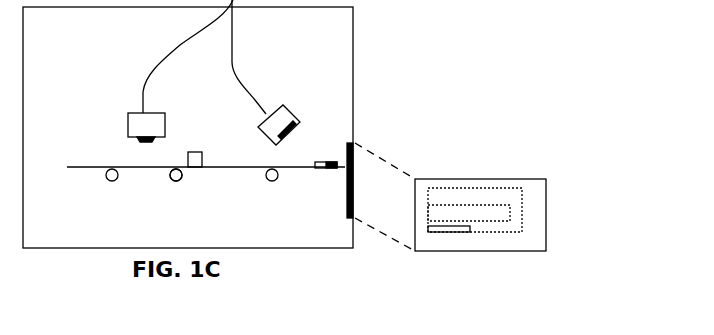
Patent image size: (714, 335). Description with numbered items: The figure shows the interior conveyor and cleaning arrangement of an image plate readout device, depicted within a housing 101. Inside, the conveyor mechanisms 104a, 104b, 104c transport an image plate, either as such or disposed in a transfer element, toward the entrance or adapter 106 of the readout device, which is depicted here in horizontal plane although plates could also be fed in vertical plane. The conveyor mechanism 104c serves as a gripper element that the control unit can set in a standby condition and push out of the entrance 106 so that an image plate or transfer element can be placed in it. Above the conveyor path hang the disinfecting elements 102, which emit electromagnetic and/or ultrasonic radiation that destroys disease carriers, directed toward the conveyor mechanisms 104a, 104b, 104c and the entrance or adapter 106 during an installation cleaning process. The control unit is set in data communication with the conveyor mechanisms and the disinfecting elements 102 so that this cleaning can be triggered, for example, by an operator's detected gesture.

The enclosure / housing 101 is at (48, 228).
The disinfecting element 102 is at (128, 115).
The conveyor mechanism 104a is at (211, 140).
The conveyor mechanism 104b is at (183, 178).
The gripper element 104c is at (324, 168).
The entrance or adapter 106 is at (345, 152).